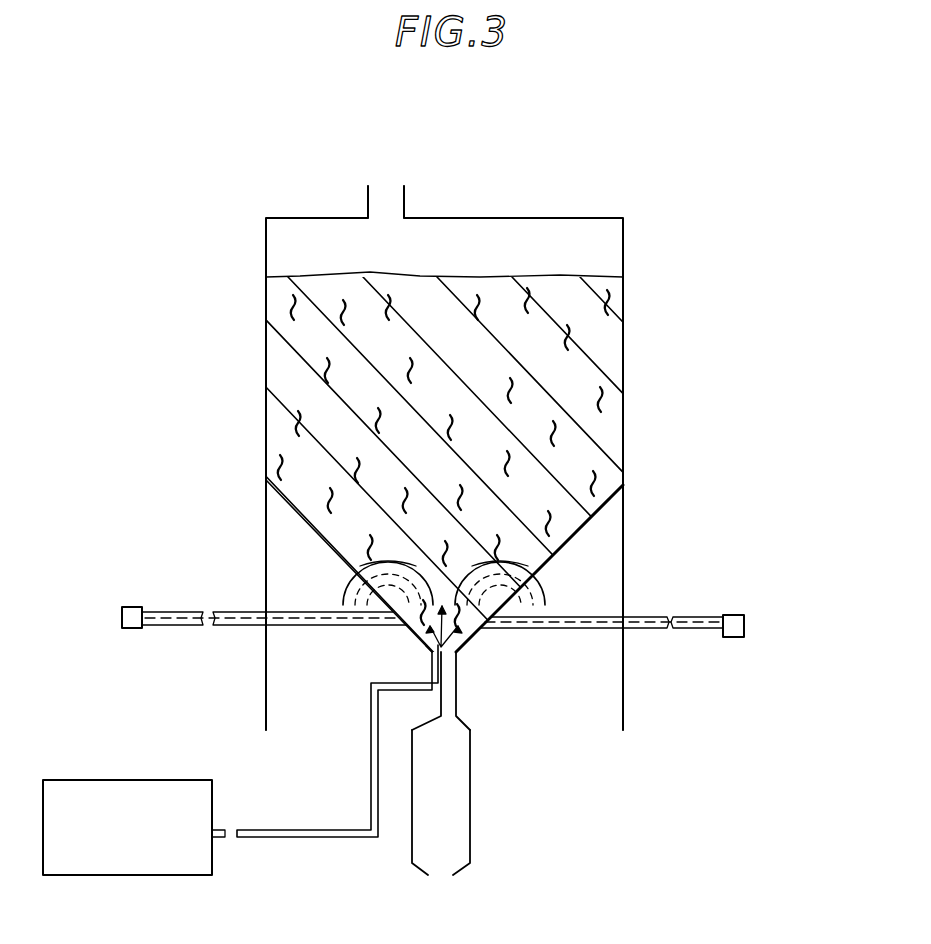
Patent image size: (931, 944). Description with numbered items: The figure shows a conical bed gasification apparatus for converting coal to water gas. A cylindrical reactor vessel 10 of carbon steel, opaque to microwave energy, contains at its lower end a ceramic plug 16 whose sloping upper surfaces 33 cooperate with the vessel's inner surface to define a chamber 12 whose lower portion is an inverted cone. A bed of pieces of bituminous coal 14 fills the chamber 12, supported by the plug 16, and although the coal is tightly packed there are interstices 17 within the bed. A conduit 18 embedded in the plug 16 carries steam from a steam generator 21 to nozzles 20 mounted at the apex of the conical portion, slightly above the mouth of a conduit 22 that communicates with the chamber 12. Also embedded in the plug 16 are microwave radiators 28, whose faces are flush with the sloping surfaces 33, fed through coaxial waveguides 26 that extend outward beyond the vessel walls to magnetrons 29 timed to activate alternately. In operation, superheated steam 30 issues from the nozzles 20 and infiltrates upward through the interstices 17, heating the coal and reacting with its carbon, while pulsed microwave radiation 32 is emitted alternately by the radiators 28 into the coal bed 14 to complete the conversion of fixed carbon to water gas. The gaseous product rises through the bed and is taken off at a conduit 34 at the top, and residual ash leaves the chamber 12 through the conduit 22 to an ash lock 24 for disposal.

The cylindrical reactor vessel 10 is at (623, 339).
The chamber 12 is at (623, 252).
The bed of pieces of bituminous coal 14 is at (610, 437).
The ceramic plug 16 is at (607, 568).
The interstices 17 is at (332, 363).
The conduit 18 is at (371, 757).
The nozzles 20 is at (458, 660).
The steam generator 21 is at (130, 872).
The conduit 22 is at (456, 700).
The ash lock 24 is at (471, 811).
The waveguides 26 is at (643, 672).
The microwave radiators 28 is at (552, 590).
The magnetrons 29 is at (740, 675).
The steam 30 is at (448, 641).
The microwave radiation 32 is at (548, 560).
The sloping upper surfaces 33 is at (293, 512).
The conduit 34 is at (370, 198).